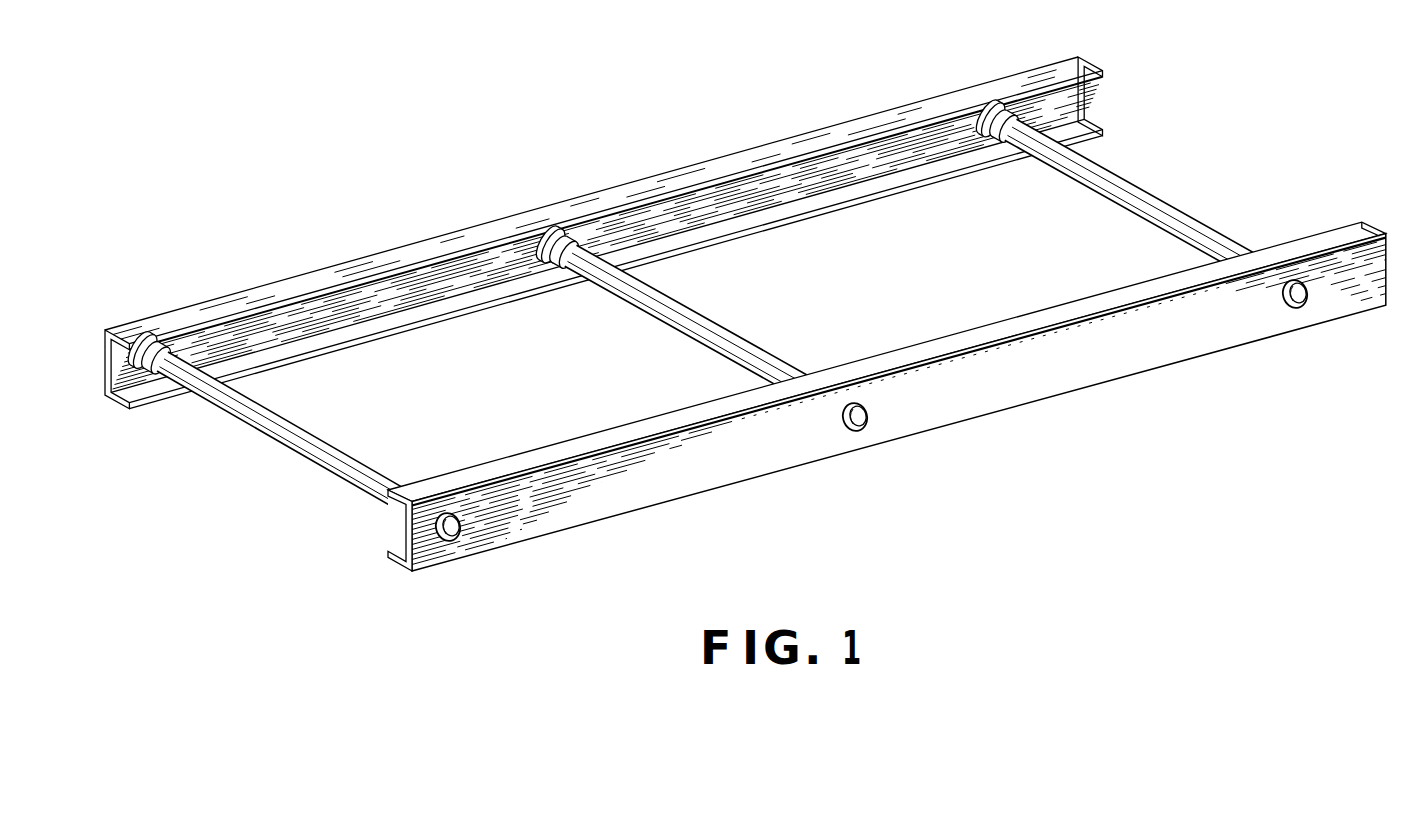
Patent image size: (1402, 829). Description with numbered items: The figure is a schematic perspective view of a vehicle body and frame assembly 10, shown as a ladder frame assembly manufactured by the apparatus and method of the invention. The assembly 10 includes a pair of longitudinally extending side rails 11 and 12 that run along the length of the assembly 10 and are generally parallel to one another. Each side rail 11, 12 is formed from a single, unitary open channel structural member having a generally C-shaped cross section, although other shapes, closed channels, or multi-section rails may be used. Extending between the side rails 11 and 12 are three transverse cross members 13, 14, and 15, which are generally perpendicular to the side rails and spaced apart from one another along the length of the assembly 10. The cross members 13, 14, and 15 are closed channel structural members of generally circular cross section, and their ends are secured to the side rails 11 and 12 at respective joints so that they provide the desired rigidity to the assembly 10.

The vehicle body and frame assembly 10 is at (464, 149).
The side rail 11 is at (773, 150).
The side rail 12 is at (1085, 370).
The cross member 13 is at (290, 445).
The cross member 14 is at (700, 327).
The cross member 15 is at (1145, 198).